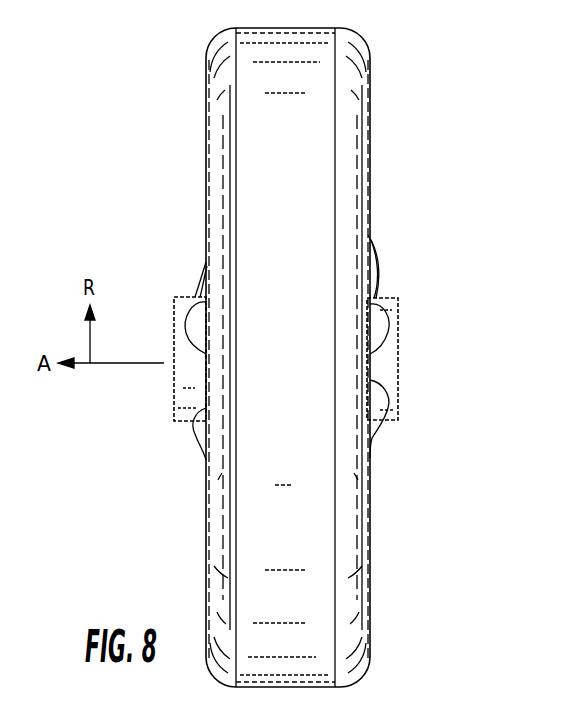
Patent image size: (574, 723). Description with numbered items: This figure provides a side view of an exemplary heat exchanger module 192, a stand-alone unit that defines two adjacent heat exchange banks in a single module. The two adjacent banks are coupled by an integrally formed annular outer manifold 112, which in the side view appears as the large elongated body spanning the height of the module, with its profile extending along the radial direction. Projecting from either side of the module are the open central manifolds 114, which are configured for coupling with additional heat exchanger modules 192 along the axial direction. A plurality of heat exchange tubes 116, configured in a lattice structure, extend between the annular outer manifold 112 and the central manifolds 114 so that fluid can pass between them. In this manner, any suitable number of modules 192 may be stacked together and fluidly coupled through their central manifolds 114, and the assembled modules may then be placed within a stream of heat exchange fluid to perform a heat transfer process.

The heat exchanger module 192 is at (408, 76).
The annular outer manifold 112 is at (297, 217).
The central manifold 114 is at (383, 354).
The heat exchange tubes 116 is at (375, 283).